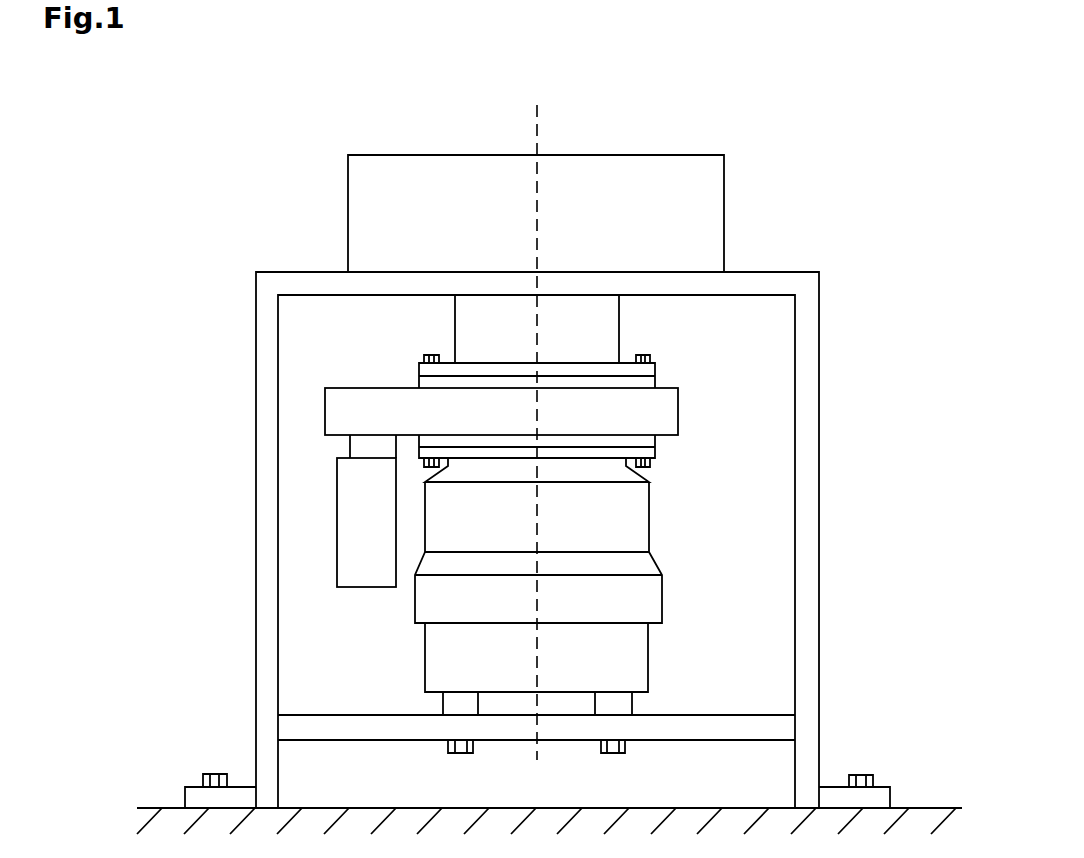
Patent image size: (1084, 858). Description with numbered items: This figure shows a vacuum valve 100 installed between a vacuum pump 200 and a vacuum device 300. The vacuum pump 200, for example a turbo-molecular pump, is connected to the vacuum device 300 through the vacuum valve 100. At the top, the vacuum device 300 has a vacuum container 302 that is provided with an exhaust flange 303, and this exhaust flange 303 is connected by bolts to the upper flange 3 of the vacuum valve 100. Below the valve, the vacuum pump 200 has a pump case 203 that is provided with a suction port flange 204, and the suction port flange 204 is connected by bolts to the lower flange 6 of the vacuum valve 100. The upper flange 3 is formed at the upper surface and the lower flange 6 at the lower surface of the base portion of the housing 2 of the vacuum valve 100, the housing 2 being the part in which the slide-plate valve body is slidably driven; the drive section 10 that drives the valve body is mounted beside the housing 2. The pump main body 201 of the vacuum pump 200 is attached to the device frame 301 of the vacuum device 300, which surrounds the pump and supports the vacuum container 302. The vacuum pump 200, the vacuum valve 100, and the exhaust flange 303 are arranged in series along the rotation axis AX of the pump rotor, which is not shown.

The housing 2 is at (383, 382).
The upper flange 3 is at (648, 383).
The lower flange 6 is at (640, 440).
The drive section 10 is at (358, 550).
The vacuum valve 100 is at (690, 405).
The vacuum pump 200 is at (669, 510).
The pump main body 201 is at (670, 605).
The pump case 203 is at (632, 520).
The suction port flange 204 is at (642, 452).
The vacuum device 300 is at (823, 216).
The device frame 301 is at (805, 692).
The vacuum container 302 is at (687, 188).
The exhaust flange 303 is at (625, 370).
The rotation axis AX is at (537, 125).